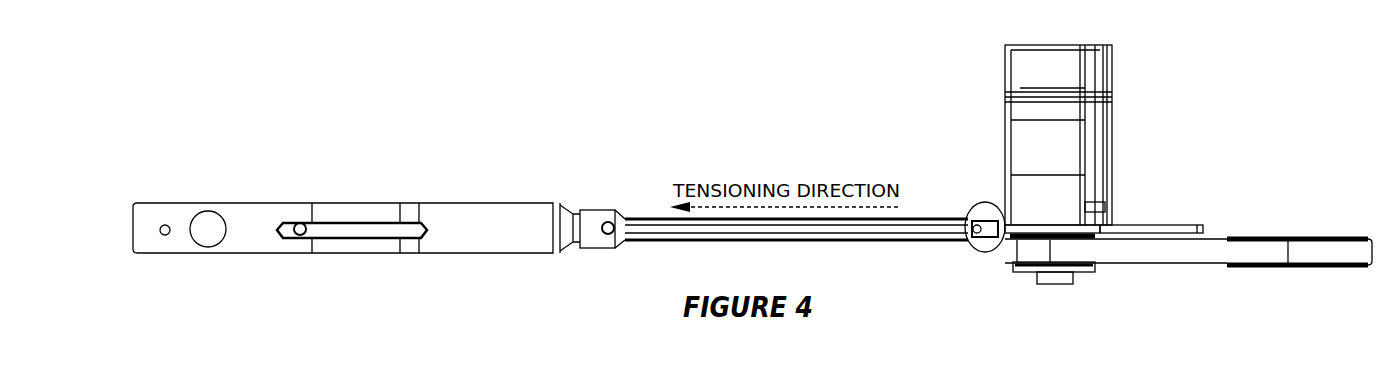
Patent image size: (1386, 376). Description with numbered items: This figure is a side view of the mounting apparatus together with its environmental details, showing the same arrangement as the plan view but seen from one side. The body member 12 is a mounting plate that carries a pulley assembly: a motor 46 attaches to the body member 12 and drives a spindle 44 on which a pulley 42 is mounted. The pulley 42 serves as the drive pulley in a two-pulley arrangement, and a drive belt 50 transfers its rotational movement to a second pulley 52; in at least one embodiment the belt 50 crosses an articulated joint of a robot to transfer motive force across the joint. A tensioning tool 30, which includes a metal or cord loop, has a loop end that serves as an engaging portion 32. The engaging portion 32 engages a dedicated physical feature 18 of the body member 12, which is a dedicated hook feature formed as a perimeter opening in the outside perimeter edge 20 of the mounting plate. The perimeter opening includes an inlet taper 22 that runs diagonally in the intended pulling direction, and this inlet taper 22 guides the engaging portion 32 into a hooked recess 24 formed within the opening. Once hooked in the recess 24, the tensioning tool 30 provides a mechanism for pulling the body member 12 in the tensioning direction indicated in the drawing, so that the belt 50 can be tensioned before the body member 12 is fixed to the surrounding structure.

The tensioning tool 30 is at (556, 149).
The engaging portion 32 is at (965, 220).
The dedicated physical feature 18 is at (972, 243).
The inlet taper 22 is at (993, 237).
The hooked recess 24 is at (977, 237).
The motor 46 is at (1010, 150).
The body member 12 is at (1140, 224).
The outside perimeter edge 20 is at (1175, 229).
The drive belt 50 is at (1162, 250).
The second pulley 52 is at (1270, 265).
The pulley 42 is at (1085, 264).
The spindle 44 is at (1060, 282).